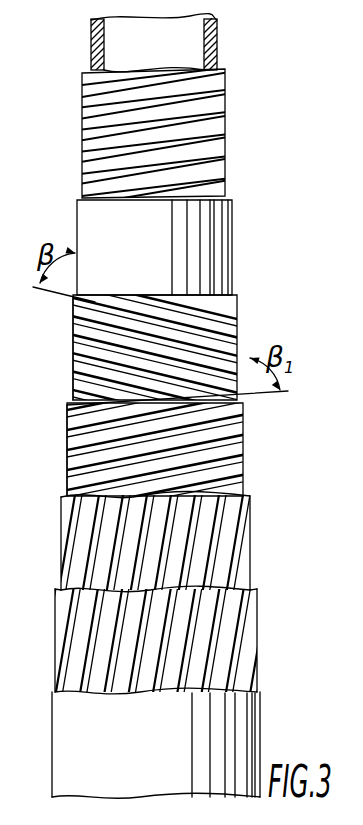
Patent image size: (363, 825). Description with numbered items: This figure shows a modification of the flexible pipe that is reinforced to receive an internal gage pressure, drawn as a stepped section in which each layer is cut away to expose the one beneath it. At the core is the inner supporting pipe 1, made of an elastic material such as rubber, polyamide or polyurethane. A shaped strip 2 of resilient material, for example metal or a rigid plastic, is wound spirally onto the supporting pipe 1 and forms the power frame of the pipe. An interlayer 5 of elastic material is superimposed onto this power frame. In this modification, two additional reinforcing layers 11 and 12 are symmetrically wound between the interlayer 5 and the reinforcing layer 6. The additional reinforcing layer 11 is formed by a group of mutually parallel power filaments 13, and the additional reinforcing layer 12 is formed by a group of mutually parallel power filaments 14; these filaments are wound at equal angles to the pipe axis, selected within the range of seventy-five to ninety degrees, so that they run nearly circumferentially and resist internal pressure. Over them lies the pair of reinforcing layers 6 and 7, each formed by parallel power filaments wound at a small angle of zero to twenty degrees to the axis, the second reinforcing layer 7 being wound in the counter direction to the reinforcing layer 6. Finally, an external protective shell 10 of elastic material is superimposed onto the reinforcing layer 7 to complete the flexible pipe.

The inner supporting pipe 1 is at (217, 40).
The shaped strip 2 is at (78, 115).
The interlayer 5 is at (223, 243).
The reinforcing layer 6 is at (252, 535).
The second reinforcing layer 7 is at (52, 613).
The external protective shell 10 is at (63, 718).
The additional reinforcing layer 11 is at (240, 324).
The additional reinforcing layer 12 is at (245, 447).
The power filaments 13 is at (73, 318).
The power filaments 14 is at (73, 430).